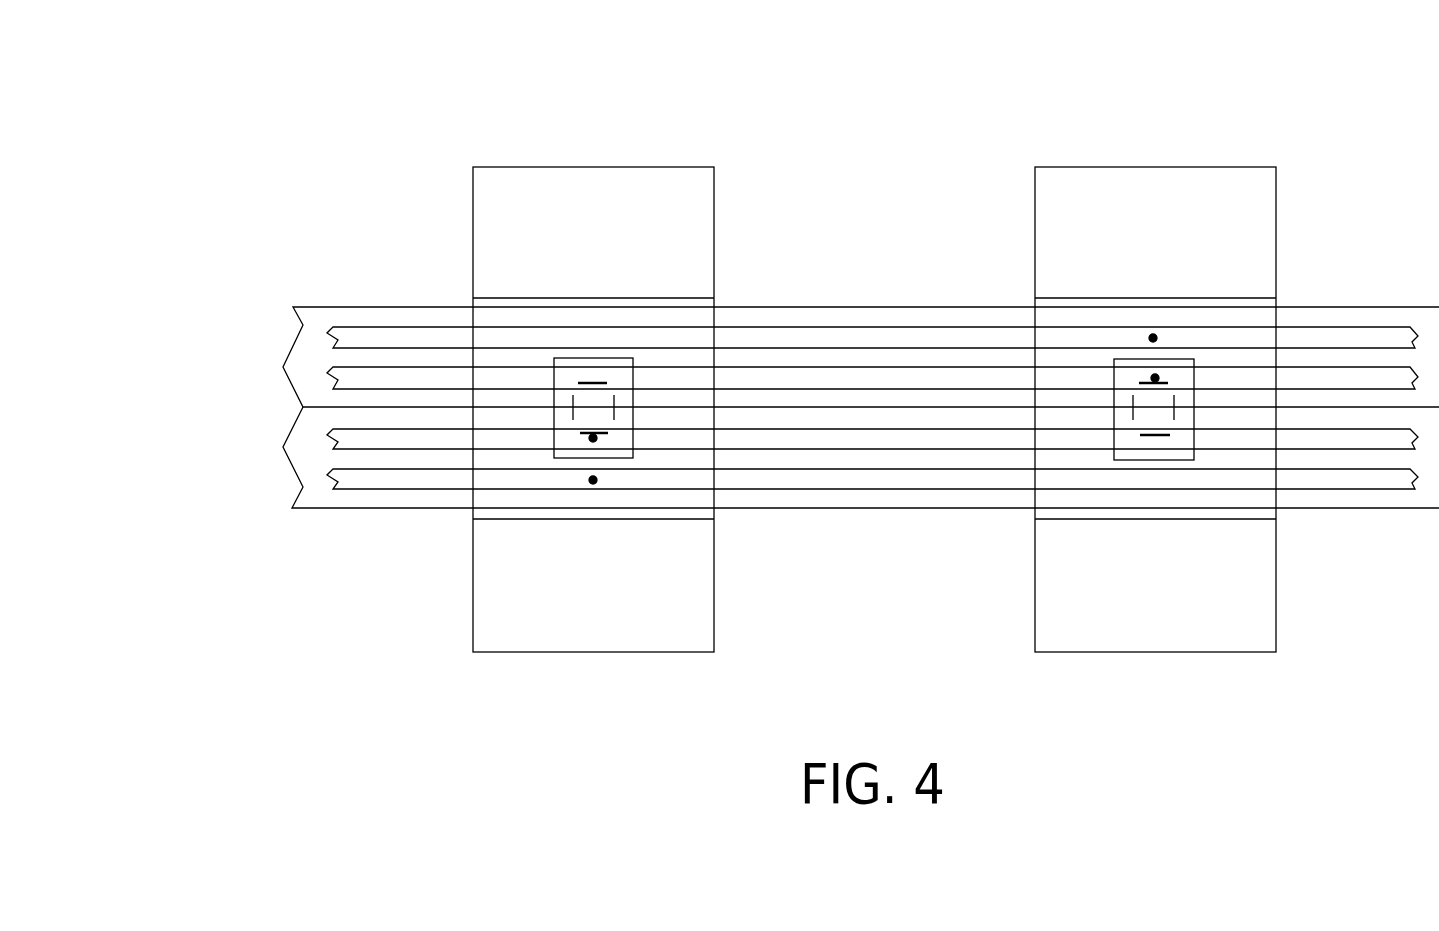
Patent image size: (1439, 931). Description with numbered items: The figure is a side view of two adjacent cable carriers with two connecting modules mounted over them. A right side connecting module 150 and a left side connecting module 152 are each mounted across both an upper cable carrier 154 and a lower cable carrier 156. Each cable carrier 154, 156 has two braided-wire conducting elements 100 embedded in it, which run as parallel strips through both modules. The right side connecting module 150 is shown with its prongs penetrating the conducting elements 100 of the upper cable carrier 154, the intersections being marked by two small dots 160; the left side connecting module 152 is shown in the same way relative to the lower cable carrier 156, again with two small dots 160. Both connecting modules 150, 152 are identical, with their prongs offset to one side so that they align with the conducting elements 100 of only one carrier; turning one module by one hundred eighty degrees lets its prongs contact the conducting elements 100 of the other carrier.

The conducting element 100 is at (374, 327).
The right side connecting module 150 is at (1155, 167).
The left side connecting module 152 is at (595, 167).
The upper cable carrier 154 is at (290, 345).
The lower cable carrier 156 is at (288, 472).
The small dots 160 is at (593, 438).